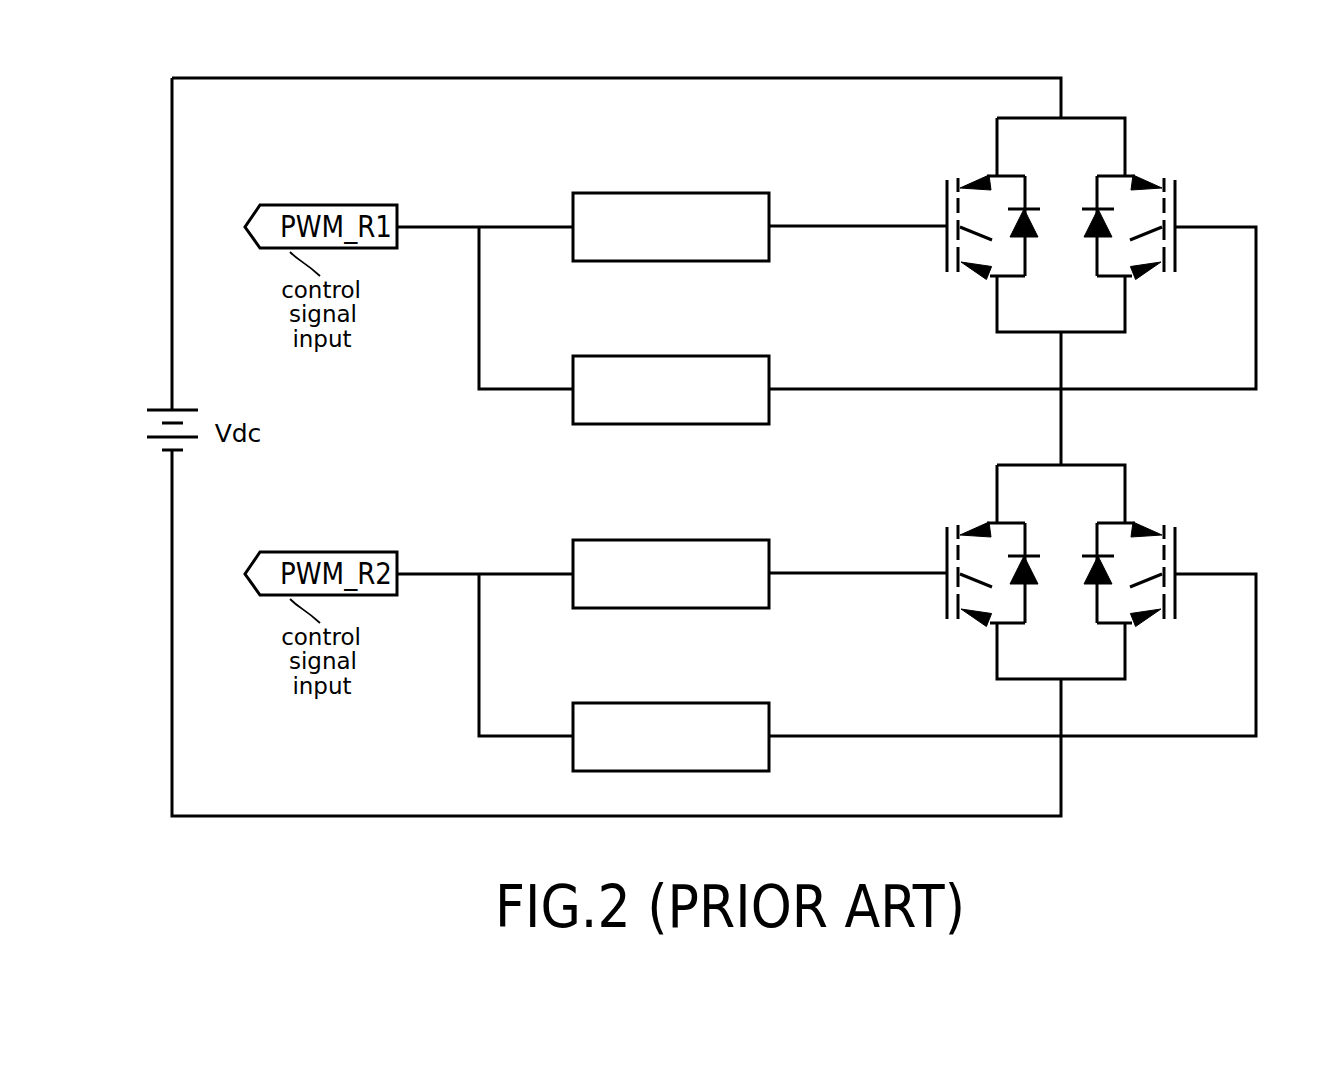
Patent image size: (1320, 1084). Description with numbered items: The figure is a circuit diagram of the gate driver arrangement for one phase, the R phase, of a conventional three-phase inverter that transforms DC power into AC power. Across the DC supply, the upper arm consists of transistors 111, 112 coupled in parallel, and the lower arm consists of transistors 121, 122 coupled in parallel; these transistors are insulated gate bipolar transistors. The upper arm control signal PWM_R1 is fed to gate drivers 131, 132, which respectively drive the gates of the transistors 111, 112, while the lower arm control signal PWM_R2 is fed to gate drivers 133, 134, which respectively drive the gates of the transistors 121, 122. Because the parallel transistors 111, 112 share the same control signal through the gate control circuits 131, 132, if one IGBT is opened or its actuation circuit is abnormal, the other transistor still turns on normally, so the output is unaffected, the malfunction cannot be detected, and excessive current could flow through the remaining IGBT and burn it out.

The transistor 111 is at (978, 165).
The transistor 112 is at (1155, 163).
The transistor 121 is at (967, 510).
The transistor 122 is at (1163, 512).
The gate driver 131 is at (752, 192).
The gate driver 132 is at (752, 355).
The gate driver 133 is at (752, 539).
The gate driver 134 is at (752, 702).